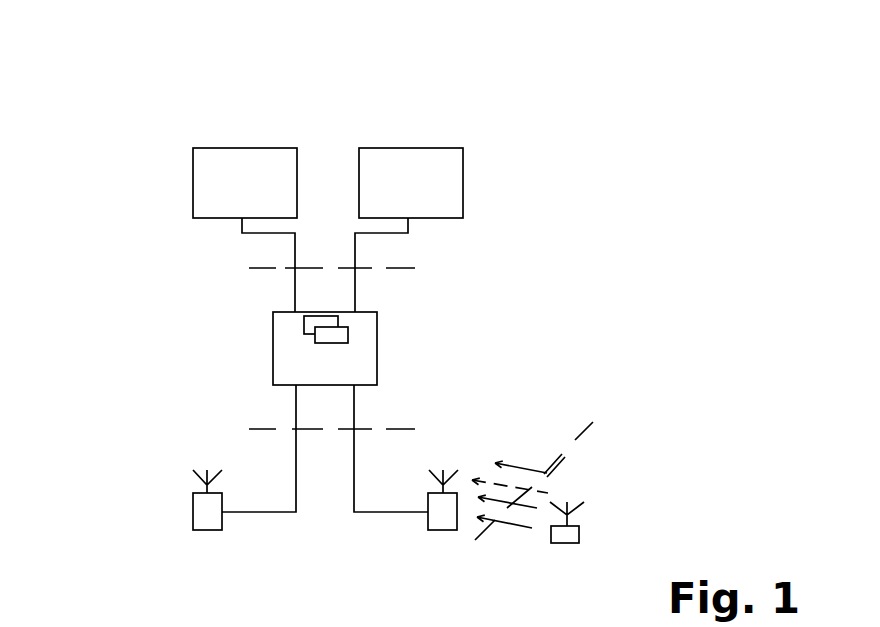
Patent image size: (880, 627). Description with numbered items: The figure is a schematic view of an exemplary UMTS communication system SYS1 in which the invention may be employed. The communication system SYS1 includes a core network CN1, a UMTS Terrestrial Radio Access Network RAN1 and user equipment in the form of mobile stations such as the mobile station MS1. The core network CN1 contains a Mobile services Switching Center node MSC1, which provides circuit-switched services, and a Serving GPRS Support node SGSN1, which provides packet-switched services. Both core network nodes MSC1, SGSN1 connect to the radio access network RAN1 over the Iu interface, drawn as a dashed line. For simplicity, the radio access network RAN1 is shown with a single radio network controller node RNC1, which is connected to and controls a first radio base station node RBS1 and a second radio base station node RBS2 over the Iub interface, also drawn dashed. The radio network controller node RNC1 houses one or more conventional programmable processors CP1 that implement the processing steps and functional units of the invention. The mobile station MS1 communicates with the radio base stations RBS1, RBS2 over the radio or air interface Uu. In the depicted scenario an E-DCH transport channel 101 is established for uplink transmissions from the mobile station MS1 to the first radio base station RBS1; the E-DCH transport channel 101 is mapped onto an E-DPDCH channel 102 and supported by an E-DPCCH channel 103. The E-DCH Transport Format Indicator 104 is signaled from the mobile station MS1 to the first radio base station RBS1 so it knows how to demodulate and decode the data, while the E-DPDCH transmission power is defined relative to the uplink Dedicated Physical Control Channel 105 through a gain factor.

The communication system SYS1 is at (763, 37).
The core network CN1 is at (101, 157).
The radio access network RAN1 is at (127, 337).
The Mobile services Switching Center node MSC1 is at (242, 148).
The Serving GPRS Support node SGSN1 is at (408, 148).
The Iu interface Iu is at (306, 267).
The radio network controller node RNC1 is at (278, 348).
The programmable processors CP1 is at (338, 344).
The Iub interface Iub is at (303, 429).
The first radio base station node RBS1 is at (446, 531).
The second radio base station node RBS2 is at (209, 531).
The Uu interface Uu is at (554, 468).
The E-DCH transport channel 101 is at (473, 479).
The E-DPDCH channel 102 is at (549, 493).
The E-DPCCH channel 103 is at (559, 459).
The E-DCH Transport Format Indicator 104 is at (519, 466).
The uplink Dedicated Physical Control Channel 105 is at (496, 521).
The mobile station MS1 is at (567, 544).